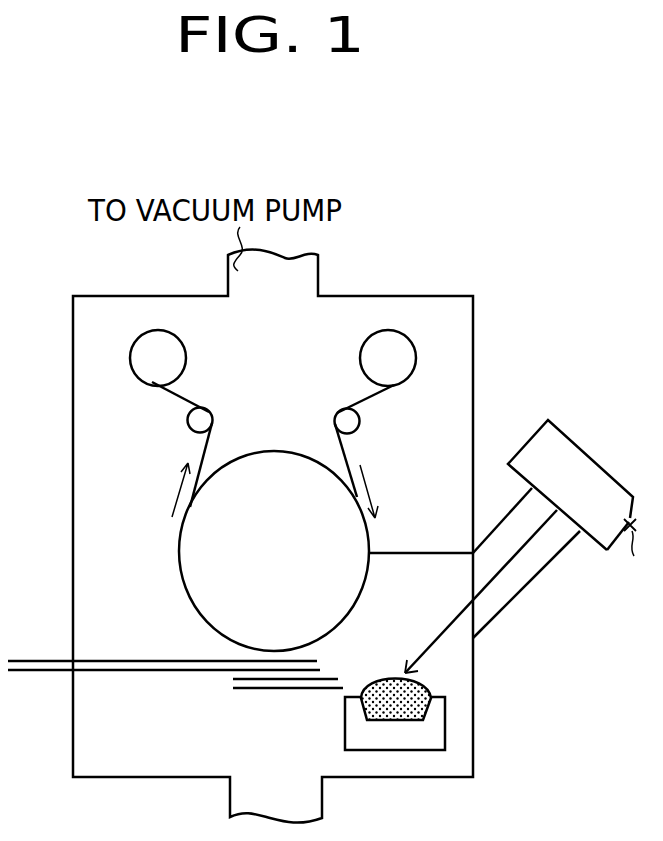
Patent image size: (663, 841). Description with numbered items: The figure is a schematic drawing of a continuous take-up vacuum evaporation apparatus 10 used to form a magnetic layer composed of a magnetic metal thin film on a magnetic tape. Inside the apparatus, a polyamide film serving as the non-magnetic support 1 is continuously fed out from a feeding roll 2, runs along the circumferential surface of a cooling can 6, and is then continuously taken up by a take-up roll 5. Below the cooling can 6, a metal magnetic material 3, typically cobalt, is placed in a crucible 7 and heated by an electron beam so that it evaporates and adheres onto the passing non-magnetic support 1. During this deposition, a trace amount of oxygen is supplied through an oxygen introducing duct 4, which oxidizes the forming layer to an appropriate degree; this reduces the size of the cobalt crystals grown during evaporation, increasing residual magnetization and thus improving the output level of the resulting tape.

The non-magnetic support 1 is at (346, 456).
The feeding roll 2 is at (392, 347).
The metal magnetic material 3 is at (423, 692).
The oxygen introducing duct 4 is at (115, 670).
The take-up roll 5 is at (143, 355).
The cooling can 6 is at (197, 550).
The crucible 7 is at (435, 731).
The continuous take-up vacuum evaporation apparatus 10 is at (397, 247).